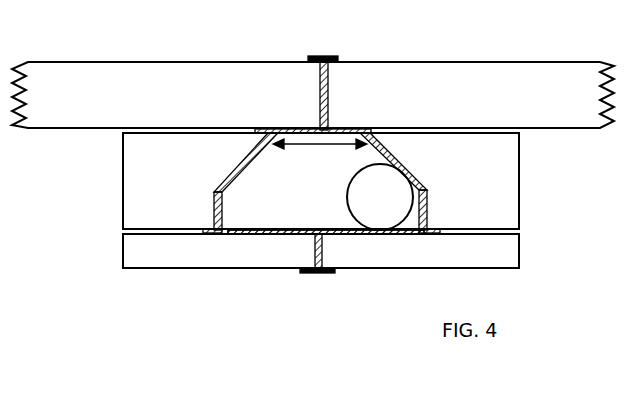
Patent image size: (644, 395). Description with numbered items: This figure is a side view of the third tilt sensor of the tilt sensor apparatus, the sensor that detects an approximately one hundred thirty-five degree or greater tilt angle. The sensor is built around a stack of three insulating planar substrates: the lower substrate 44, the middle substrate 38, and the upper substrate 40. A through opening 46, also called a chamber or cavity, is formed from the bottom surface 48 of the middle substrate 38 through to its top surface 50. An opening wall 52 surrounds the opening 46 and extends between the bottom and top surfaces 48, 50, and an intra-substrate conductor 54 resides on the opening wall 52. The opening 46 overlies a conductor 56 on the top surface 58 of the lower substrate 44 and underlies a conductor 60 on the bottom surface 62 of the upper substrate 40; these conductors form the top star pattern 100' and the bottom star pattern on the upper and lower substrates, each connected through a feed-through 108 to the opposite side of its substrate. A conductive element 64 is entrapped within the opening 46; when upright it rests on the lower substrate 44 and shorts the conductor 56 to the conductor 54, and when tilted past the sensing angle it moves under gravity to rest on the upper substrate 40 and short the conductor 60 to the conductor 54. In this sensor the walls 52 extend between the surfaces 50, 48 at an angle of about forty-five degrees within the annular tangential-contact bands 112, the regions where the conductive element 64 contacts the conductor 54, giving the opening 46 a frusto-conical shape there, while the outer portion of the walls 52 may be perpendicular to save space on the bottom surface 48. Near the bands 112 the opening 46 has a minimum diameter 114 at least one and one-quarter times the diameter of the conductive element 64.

The upper substrate 40 is at (533, 62).
The top surface of middle substrate 50 is at (140, 128).
The bottom surface of upper substrate 62 is at (92, 128).
The top star pattern 100' is at (279, 114).
The feed-through 108 is at (320, 84).
The conductor 60 is at (332, 128).
The middle substrate 38 is at (519, 178).
The bottom surface of middle substrate 48 is at (123, 232).
The top surface of lower substrate 58 is at (521, 234).
The lower substrate 44 is at (508, 268).
The through opening 46 is at (285, 235).
The conductor 56 is at (275, 233).
The annular tangential-contact bands 112 is at (240, 170).
The opening wall 52 is at (214, 197).
The intra-substrate conductor 54 is at (428, 200).
The conductive element 64 is at (349, 206).
The minimum diameter 114 is at (317, 148).